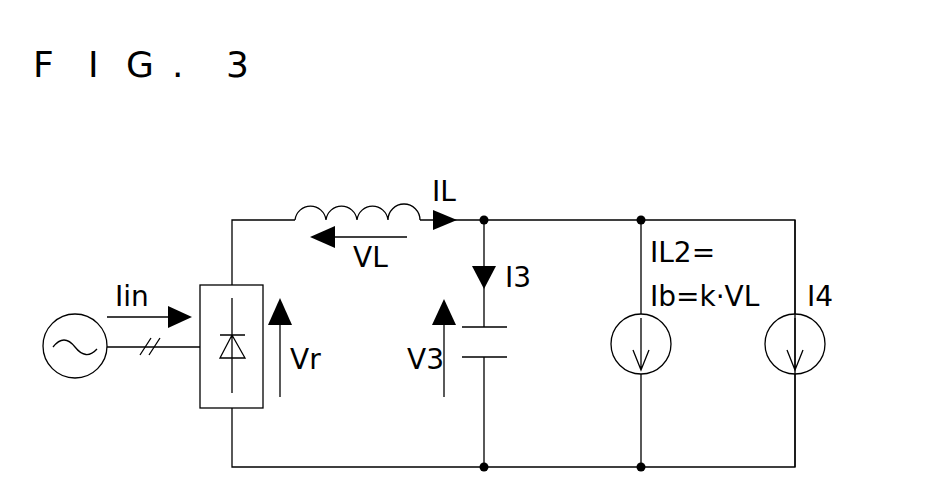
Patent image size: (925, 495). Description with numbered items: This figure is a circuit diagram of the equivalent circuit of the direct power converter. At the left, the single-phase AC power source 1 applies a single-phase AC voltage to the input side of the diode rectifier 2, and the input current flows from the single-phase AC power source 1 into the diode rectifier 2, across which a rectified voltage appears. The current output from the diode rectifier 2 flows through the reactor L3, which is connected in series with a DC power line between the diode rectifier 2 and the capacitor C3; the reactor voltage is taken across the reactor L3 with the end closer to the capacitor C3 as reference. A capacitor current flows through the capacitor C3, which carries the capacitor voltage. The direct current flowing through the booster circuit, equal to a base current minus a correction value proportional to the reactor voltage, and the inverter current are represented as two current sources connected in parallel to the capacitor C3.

The single-phase AC power source 1 is at (72, 378).
The diode rectifier 2 is at (213, 408).
The reactor L3 is at (352, 202).
The capacitor C3 is at (512, 352).